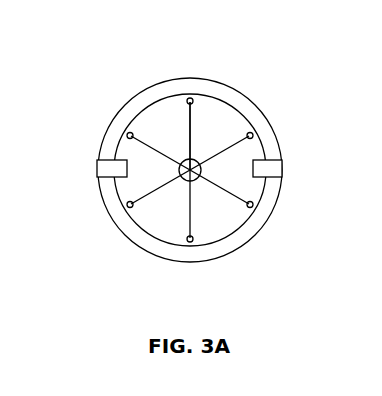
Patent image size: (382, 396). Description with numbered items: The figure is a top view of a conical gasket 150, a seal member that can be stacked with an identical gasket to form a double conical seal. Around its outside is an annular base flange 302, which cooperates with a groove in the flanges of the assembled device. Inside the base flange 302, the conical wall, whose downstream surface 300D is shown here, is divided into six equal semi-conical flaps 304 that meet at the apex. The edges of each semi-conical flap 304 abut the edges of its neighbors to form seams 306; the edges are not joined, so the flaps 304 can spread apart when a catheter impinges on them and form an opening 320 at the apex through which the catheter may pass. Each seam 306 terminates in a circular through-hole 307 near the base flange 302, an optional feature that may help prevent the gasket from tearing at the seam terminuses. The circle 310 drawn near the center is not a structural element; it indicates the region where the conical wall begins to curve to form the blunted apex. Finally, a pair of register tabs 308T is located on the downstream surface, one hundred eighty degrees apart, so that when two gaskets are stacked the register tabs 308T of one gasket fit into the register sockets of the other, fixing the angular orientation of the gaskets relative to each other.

The conical gasket 150 is at (163, 54).
The annular base flange 302 is at (223, 87).
The semi-conical flap 304 is at (223, 120).
The seam 306 is at (230, 146).
The circular through-hole 307 is at (123, 146).
The opening 320 is at (178, 170).
The circle 310 is at (197, 180).
The register tab 308T is at (107, 175).
The downstream surface of the conical wall 300D is at (184, 229).